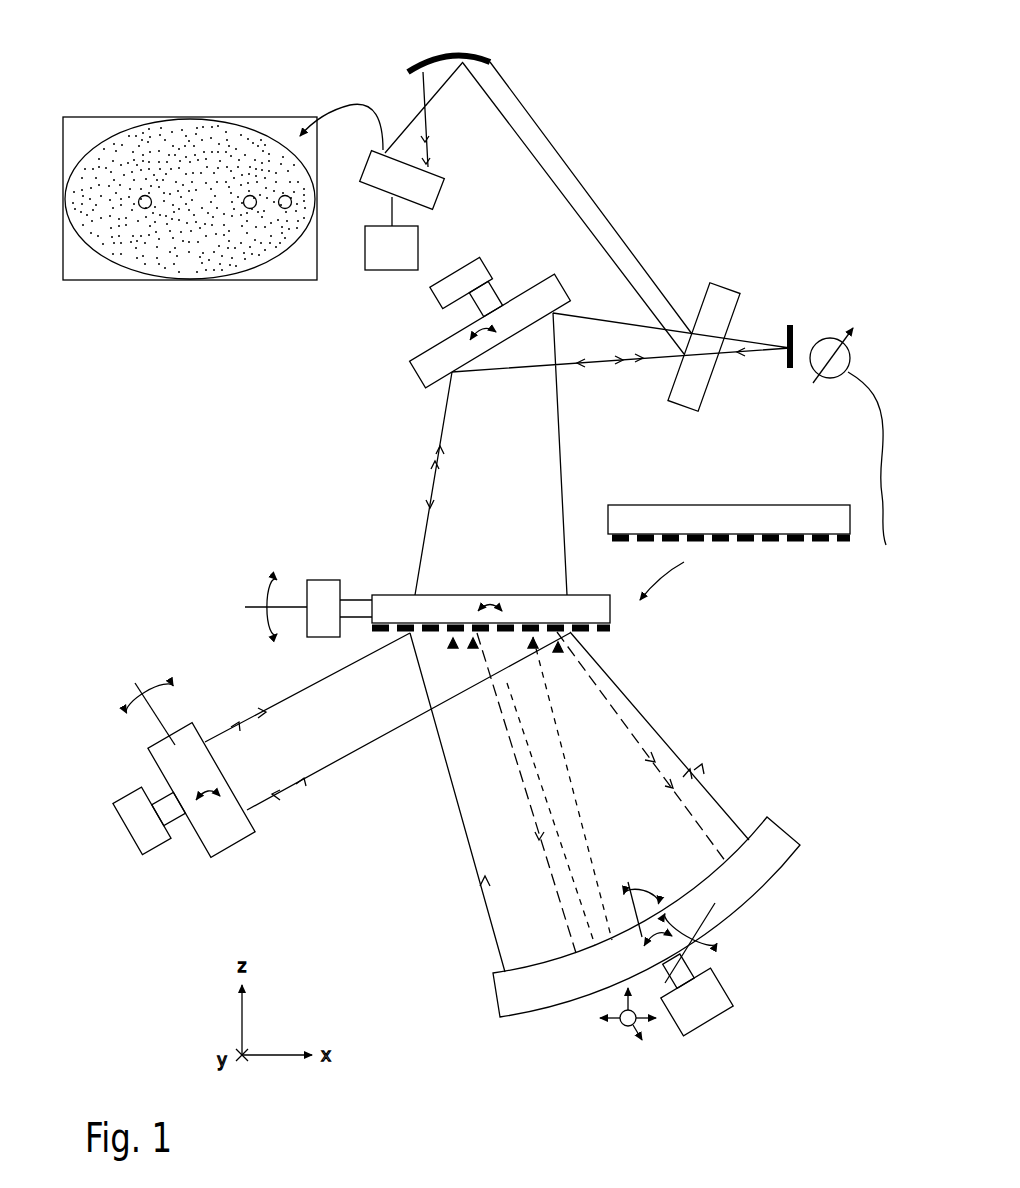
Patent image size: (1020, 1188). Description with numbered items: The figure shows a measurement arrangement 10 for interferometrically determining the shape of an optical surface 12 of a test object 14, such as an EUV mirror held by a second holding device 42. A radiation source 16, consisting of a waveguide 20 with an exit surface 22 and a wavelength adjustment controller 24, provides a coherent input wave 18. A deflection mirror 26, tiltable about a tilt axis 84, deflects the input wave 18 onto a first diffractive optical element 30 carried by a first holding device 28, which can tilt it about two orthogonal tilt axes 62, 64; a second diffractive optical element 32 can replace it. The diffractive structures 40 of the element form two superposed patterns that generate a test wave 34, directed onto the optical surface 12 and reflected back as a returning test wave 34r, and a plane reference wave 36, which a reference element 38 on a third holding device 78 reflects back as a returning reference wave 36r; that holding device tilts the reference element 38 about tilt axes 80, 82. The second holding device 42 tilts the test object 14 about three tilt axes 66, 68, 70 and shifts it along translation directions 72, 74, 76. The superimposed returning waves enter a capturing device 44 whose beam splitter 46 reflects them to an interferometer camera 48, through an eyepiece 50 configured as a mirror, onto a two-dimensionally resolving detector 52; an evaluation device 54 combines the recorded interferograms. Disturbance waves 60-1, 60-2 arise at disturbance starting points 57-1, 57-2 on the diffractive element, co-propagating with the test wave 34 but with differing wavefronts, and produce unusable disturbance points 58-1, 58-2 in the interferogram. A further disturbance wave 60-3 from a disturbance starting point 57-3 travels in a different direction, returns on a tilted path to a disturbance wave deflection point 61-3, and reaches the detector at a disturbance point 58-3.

The measurement arrangement 10 is at (355, 435).
The optical surface 12 is at (768, 822).
The test object 14 is at (770, 862).
The radiation source 16 is at (812, 320).
The input wave 18 is at (578, 368).
The waveguide 20 is at (880, 468).
The exit surface 22 is at (790, 325).
The wavelength adjustment controller 24 is at (828, 380).
The deflection mirror 26 is at (410, 373).
The first holding device 28 is at (323, 580).
The first diffractive optical element 30 is at (595, 600).
The second diffractive optical element 32 is at (632, 505).
The test wave 34 is at (490, 930).
The returning test wave 34r is at (643, 362).
The reference wave 36 is at (237, 727).
The returning reference wave 36r is at (623, 363).
The reference element 38 is at (232, 850).
The diffractive structures 40 is at (812, 540).
The second holding device 42 is at (735, 992).
The capturing device 44 is at (628, 210).
The beam splitter 46 is at (722, 285).
The interferometer camera 48 is at (498, 198).
The eyepiece 50 is at (452, 55).
The two-dimensionally resolving detector 52 is at (440, 196).
The evaluation device 54 is at (380, 272).
The disturbance starting point 57-1 is at (453, 648).
The disturbance starting point 57-2 is at (560, 652).
The disturbance starting point 57-3 is at (473, 648).
The disturbance point 58-1 is at (144, 210).
The disturbance point 58-2 is at (287, 210).
The disturbance point 58-3 is at (250, 210).
The disturbance wave 60-1 is at (528, 800).
The disturbance wave 60-2 is at (632, 735).
The disturbance wave 60-3 is at (565, 857).
The disturbance wave deflection point 61-3 is at (533, 648).
The tilt axis 62 is at (490, 596).
The tilt axis 64 is at (258, 605).
The tilt axis 66 is at (652, 947).
The tilt axis 68 is at (713, 907).
The tilt axis 70 is at (632, 895).
The translation direction 72 is at (603, 1022).
The translation direction 74 is at (640, 1042).
The translation direction 76 is at (625, 1028).
The third holding device 78 is at (160, 840).
The tilt axis 80 is at (185, 790).
The tilt axis 82 is at (140, 688).
The tilt axis 84 is at (500, 345).